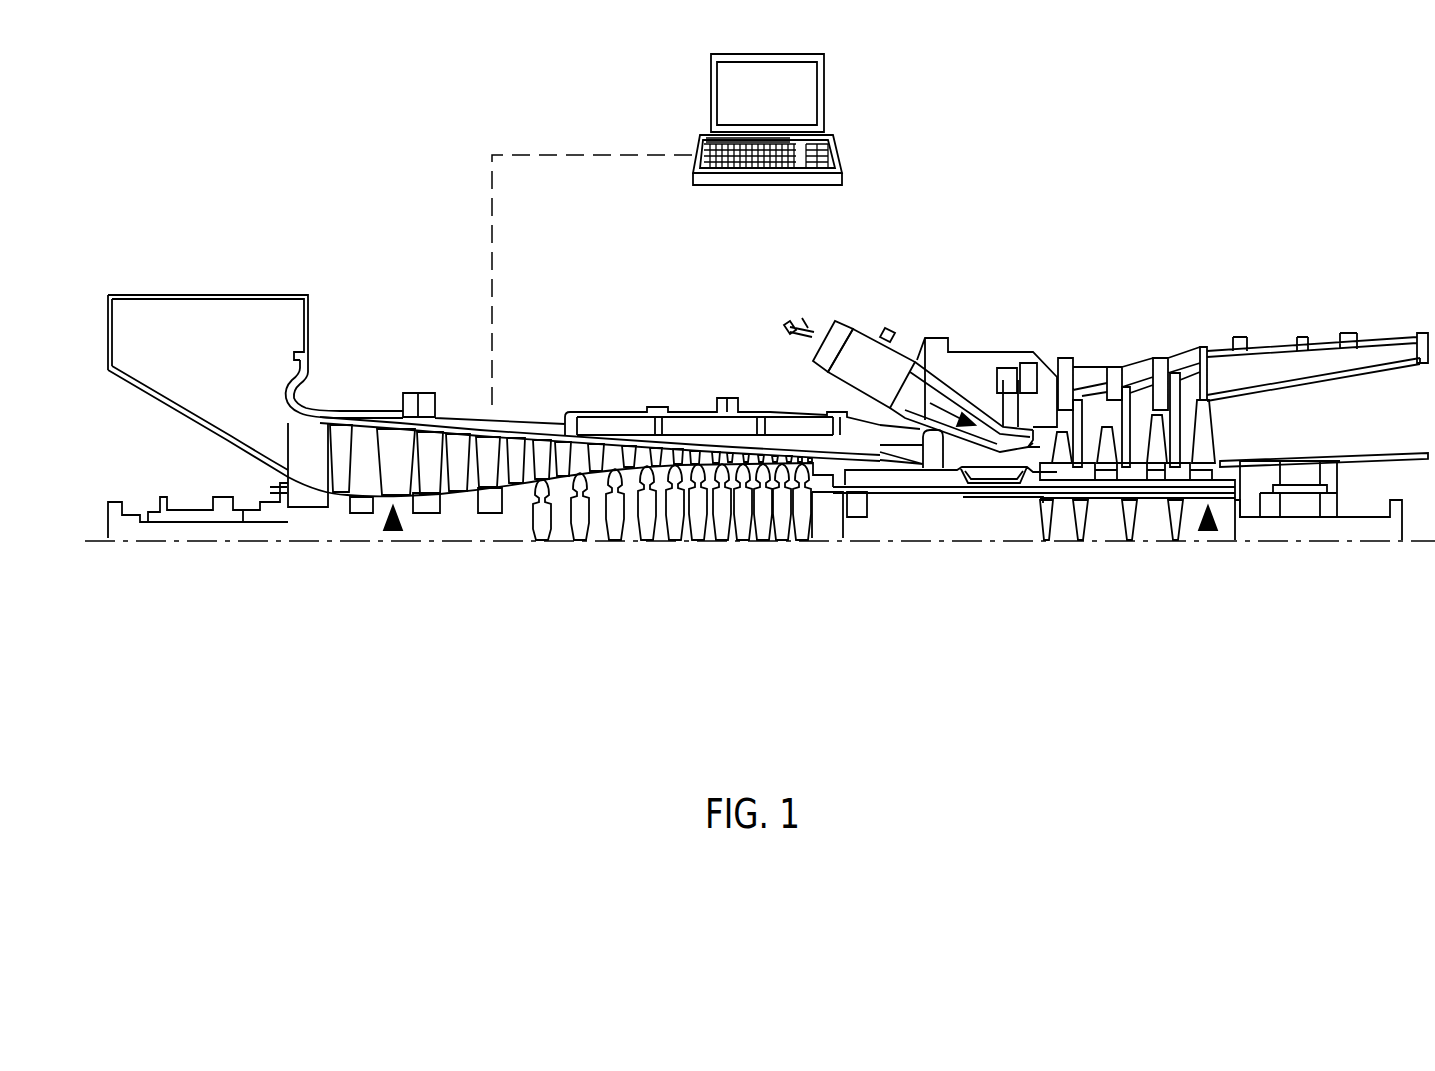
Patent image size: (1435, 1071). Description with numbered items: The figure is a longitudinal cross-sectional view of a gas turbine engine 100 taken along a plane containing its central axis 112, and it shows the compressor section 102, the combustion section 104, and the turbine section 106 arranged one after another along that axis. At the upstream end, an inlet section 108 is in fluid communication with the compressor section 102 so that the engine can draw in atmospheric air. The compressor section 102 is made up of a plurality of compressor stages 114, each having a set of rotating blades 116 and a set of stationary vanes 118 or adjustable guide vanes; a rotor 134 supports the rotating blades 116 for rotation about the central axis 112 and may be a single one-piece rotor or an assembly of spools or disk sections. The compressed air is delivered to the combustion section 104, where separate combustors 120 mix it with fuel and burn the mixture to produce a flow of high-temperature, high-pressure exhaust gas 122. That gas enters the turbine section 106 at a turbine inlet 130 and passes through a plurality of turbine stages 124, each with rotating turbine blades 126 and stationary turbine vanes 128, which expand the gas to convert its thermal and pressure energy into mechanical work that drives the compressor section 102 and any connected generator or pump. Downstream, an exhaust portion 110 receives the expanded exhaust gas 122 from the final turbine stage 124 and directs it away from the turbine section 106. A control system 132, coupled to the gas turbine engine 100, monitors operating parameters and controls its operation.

The gas turbine engine 100 is at (1116, 89).
The compressor section 102 is at (810, 612).
The combustion section 104 is at (1045, 612).
The turbine section 106 is at (1248, 612).
The inlet section 108 is at (289, 612).
The exhaust portion 110 is at (1428, 612).
The central axis 112 is at (883, 545).
The compressor stage 114 is at (396, 533).
The rotating blades 116 is at (390, 447).
The stationary vanes 118 is at (362, 447).
The combustor 120 is at (838, 325).
The exhaust gas 122 is at (958, 413).
The turbine stage 124 is at (1205, 533).
The rotating turbine blades 126 is at (1203, 433).
The stationary turbine vanes 128 is at (1175, 422).
The turbine inlet 130 is at (1027, 440).
The control system 132 is at (824, 90).
The rotor 134 is at (258, 530).